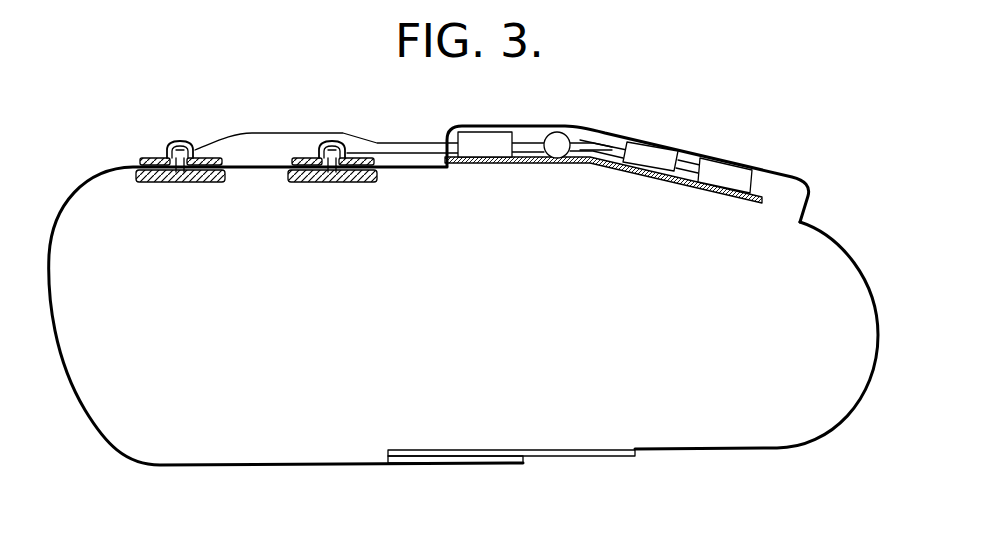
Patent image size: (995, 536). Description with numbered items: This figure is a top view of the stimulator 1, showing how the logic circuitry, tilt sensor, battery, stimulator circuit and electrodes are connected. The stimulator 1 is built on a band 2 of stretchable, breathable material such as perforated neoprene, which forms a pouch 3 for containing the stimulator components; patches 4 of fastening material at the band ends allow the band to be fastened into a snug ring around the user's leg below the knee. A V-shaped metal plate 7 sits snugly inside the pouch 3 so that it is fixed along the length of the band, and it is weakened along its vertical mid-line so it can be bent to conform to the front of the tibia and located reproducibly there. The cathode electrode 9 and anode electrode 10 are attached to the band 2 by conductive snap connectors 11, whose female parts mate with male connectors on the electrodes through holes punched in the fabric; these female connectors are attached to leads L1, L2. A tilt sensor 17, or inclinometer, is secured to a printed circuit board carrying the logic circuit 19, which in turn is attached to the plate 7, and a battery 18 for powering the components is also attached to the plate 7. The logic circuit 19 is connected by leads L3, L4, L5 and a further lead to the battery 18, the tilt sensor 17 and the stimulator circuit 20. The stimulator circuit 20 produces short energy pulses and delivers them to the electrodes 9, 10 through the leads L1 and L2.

The stimulator 1 is at (262, 68).
The band 2 is at (853, 260).
The pouch 3 is at (809, 181).
The patches of fastening material 4 is at (443, 455).
The V-shaped metal plate 7 is at (590, 165).
The cathode electrode 9 is at (186, 183).
The anode electrode 10 is at (340, 183).
The conductive snap connectors 11 is at (168, 145).
The tilt sensor 17 is at (657, 157).
The battery 18 is at (557, 136).
The logic circuit 19 is at (727, 172).
The stimulator circuit 20 is at (478, 140).
The lead L1 is at (410, 154).
The lead L2 is at (276, 133).
The lead L3 is at (620, 127).
The lead L4 is at (689, 162).
The lead L5 is at (687, 170).